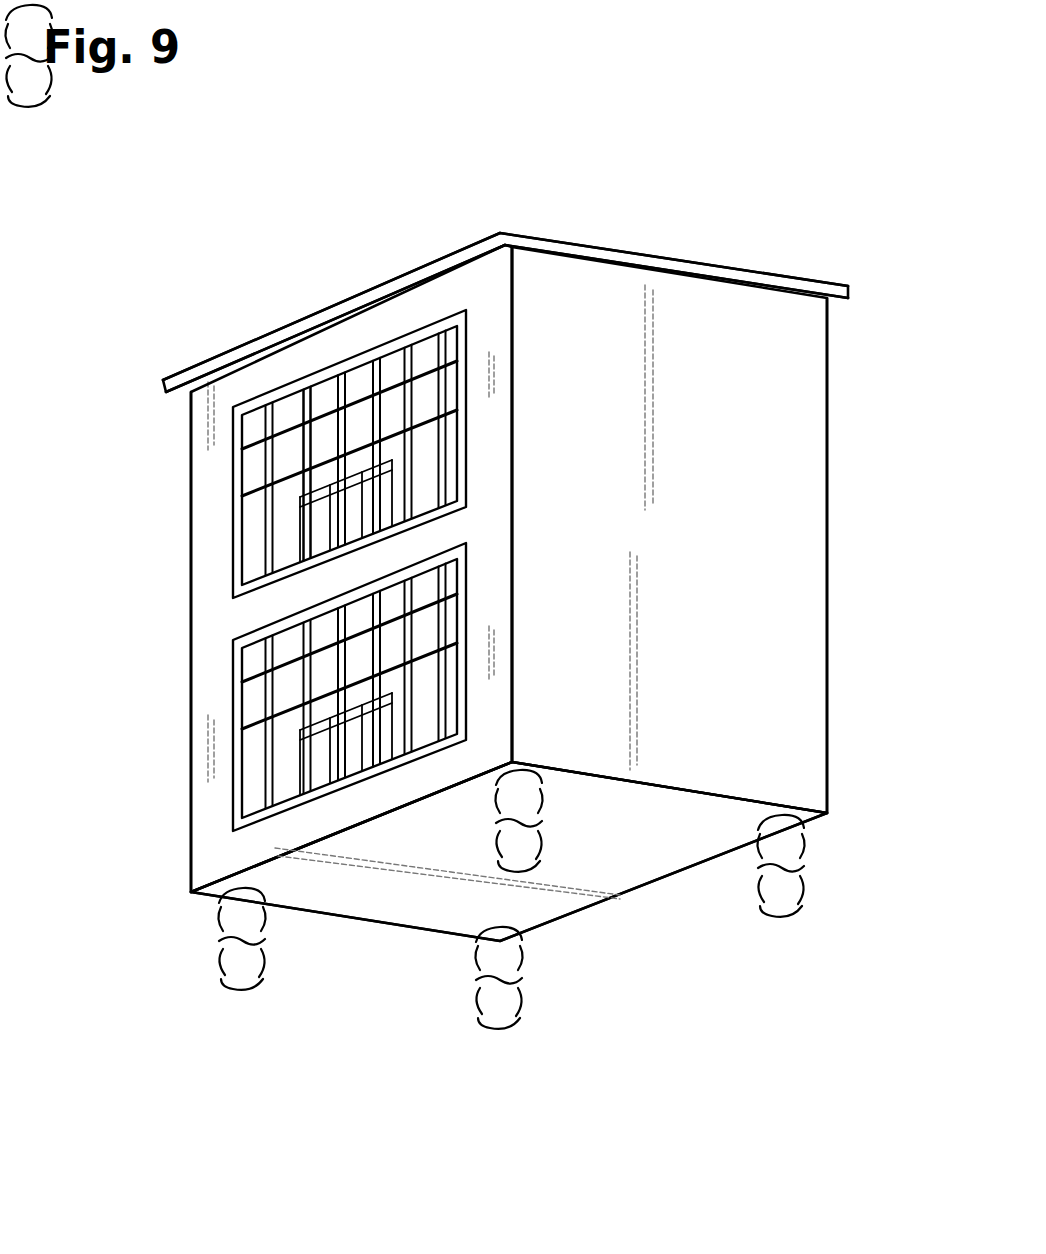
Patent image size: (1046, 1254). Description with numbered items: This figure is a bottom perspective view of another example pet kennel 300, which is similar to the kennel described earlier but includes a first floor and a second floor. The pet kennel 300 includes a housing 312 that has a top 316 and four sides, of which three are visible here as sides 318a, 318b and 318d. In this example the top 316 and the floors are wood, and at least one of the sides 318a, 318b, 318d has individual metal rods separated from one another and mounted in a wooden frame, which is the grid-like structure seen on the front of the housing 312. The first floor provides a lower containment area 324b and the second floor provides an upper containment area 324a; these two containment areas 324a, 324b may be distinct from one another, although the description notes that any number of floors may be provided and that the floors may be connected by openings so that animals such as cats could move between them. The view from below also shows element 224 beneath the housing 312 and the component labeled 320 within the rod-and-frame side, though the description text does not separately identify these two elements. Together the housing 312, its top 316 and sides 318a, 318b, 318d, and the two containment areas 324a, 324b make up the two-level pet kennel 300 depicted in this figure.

The pet kennel 300 is at (735, 242).
The housing 312 is at (597, 230).
The top 316 is at (268, 330).
The side 318a is at (830, 770).
The side 318b is at (567, 915).
The side 318d is at (358, 316).
The divider 320 is at (300, 495).
The upper containment area 324a is at (272, 695).
The lower containment area 324b is at (276, 502).
The base 224 is at (594, 834).